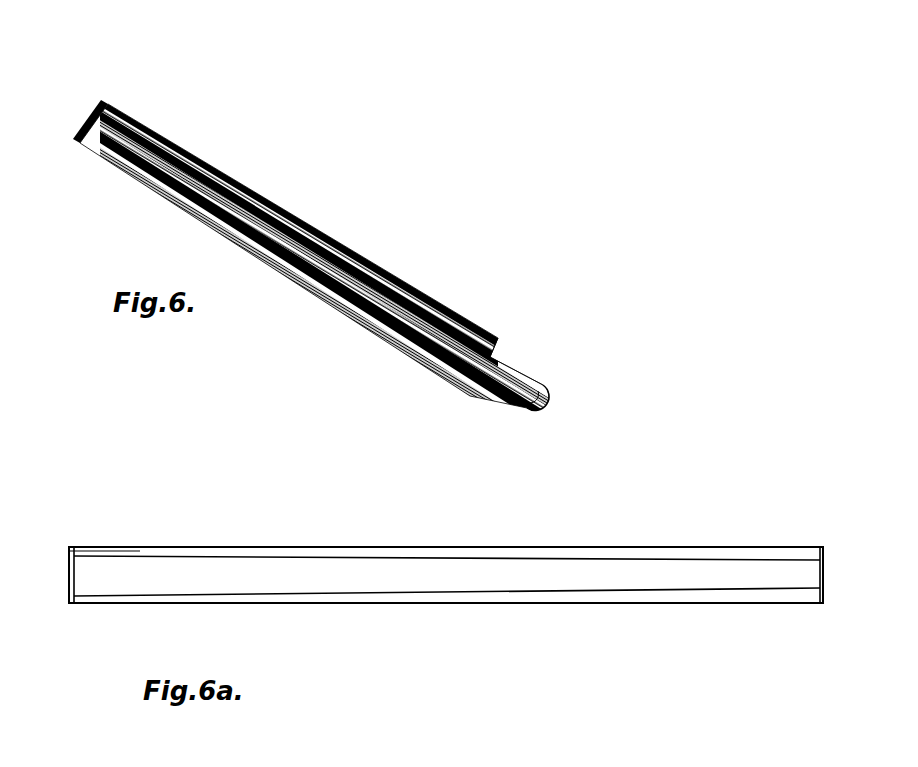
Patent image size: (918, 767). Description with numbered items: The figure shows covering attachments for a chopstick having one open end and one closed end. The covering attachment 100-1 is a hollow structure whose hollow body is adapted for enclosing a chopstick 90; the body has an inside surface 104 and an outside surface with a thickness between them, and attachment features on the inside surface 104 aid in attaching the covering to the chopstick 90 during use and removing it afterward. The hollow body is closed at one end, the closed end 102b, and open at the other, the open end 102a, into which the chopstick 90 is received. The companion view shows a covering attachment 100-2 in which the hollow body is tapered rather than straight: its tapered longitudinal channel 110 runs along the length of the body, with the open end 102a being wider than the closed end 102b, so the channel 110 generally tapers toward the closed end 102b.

In FIG. 6, the covering attachment 100-1 is at (305, 170).
In FIG. 6A, the covering attachment 100-2 is at (222, 533).
In FIG. 6, the open end 102a is at (483, 387).
In FIG. 6A, the open end 102a is at (80, 573).
In FIG. 6, the closed end 102b is at (104, 108).
In FIG. 6A, the closed end 102b is at (815, 573).
In FIG. 6, the inside surface 104 is at (433, 308).
In FIG. 6, the tapered longitudinal channel 110 is at (393, 277).
In FIG. 6A, the tapered longitudinal channel 110 is at (260, 578).
In FIG. 6, the chopstick 90 is at (526, 377).